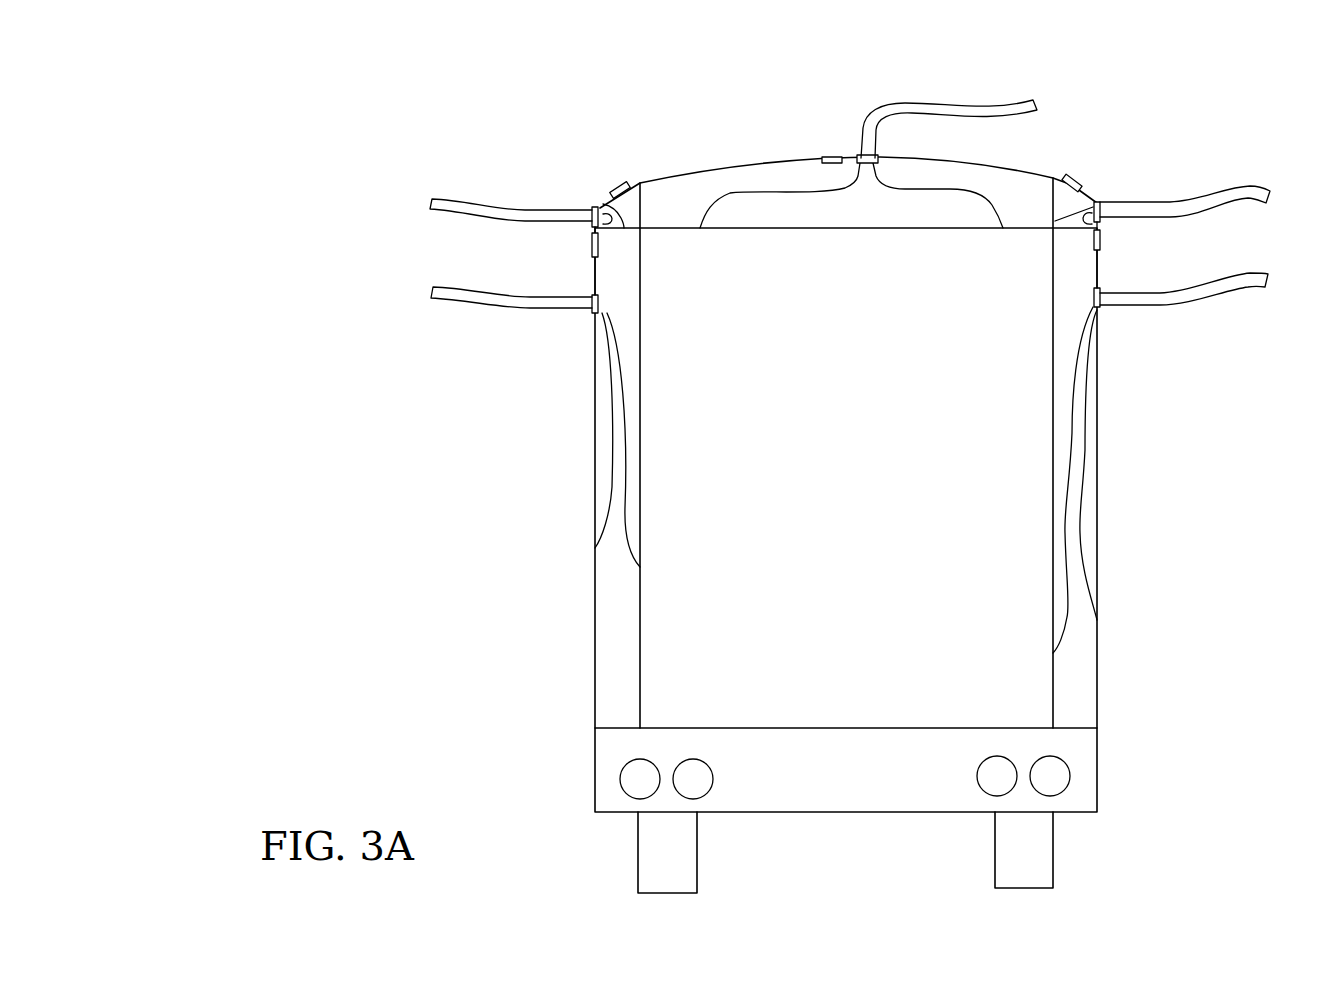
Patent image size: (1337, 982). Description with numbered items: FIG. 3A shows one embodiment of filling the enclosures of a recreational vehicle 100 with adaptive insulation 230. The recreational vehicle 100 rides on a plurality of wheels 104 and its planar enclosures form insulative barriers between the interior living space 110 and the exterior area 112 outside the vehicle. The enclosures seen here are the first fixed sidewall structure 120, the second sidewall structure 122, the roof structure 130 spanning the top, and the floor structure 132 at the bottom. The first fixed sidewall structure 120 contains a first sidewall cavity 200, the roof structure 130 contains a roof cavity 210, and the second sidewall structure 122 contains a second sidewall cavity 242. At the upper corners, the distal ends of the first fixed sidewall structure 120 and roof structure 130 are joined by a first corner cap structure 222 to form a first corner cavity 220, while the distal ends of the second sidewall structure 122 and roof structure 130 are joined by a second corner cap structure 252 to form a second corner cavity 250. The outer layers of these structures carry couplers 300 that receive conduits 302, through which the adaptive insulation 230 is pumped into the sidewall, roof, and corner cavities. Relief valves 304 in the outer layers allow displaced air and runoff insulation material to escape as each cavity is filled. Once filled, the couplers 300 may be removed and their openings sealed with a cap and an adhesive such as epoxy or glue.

The recreational vehicle 100 is at (614, 86).
The wheels 104 is at (638, 882).
The interior living space 110 is at (829, 517).
The exterior area 112 is at (527, 508).
The first fixed sidewall structure 120 is at (594, 690).
The second sidewall structure 122 is at (1098, 670).
The roof structure 130 is at (790, 166).
The floor structure 132 is at (839, 727).
The first sidewall cavity 200 is at (627, 292).
The roof cavity 210 is at (954, 179).
The first corner cavity 220 is at (630, 212).
The first corner cap structure 222 is at (600, 202).
The adaptive insulation 230 is at (618, 228).
The second sidewall cavity 242 is at (1070, 294).
The second corner cavity 250 is at (1077, 200).
The second corner cap structure 252 is at (1098, 200).
The couplers 300 is at (590, 208).
The conduits 302 is at (455, 197).
The relief valves 304 is at (832, 156).